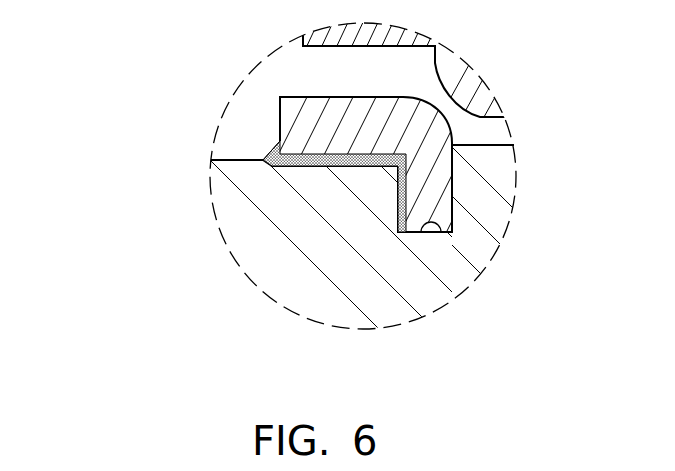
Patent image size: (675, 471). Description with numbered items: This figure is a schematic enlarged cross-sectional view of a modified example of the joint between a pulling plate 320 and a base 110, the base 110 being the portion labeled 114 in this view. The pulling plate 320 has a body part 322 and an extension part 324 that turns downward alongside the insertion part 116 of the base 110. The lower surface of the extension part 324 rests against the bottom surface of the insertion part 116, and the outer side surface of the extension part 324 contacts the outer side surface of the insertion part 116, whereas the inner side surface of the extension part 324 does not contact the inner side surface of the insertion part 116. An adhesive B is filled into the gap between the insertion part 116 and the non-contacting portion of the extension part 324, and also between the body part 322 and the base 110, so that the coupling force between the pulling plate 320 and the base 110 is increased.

The lower body portion 114 is at (342, 240).
The base 110 is at (280, 253).
The insertion part 116 is at (344, 142).
The pulling plate 320 is at (420, 238).
The body part 322 is at (439, 232).
The extension part 324 is at (420, 203).
The adhesive B is at (277, 152).